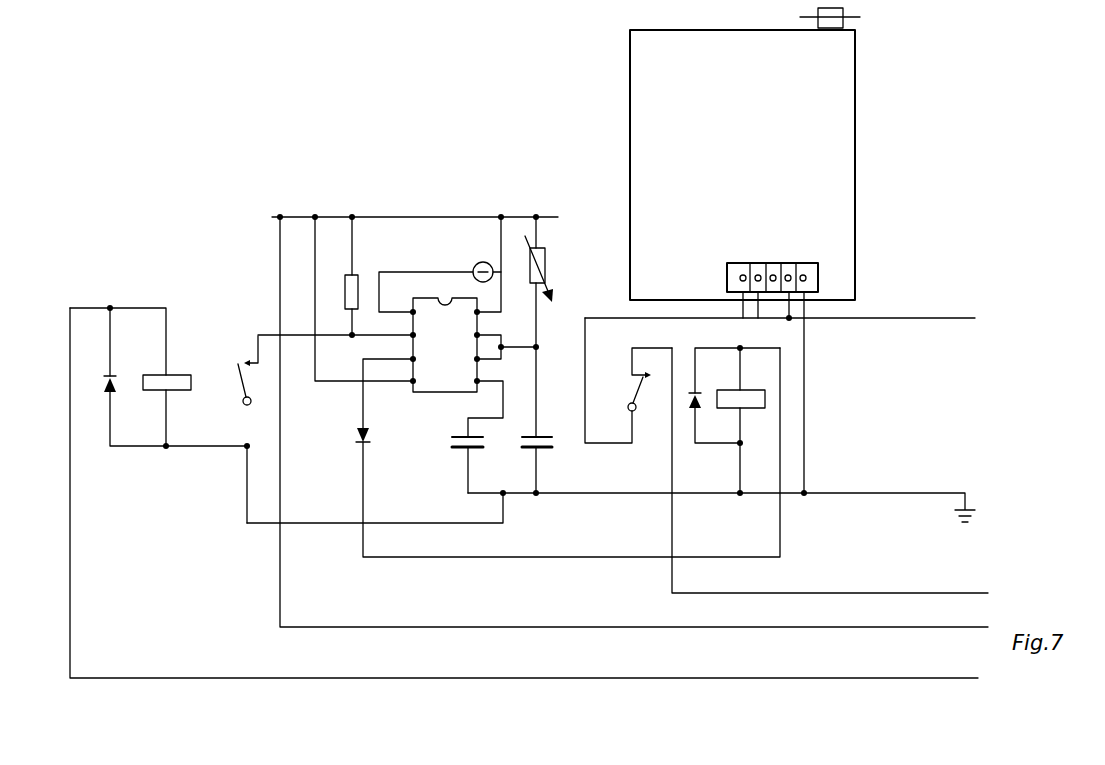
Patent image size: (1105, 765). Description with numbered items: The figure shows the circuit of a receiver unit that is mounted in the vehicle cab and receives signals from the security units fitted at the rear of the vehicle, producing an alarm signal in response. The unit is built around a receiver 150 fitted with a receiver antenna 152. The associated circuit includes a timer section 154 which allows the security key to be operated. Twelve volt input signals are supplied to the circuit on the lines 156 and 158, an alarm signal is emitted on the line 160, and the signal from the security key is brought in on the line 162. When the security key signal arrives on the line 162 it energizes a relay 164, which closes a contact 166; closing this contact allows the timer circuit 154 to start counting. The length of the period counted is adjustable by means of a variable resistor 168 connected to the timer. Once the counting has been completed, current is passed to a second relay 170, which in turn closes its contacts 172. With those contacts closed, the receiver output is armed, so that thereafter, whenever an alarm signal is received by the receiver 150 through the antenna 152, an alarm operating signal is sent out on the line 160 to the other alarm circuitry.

The receiver 150 is at (760, 159).
The receiver antenna 152 is at (845, 17).
The timer section 154 is at (436, 218).
The line 156 is at (935, 317).
The line 158 is at (935, 627).
The line 160 is at (968, 593).
The line 162 is at (962, 678).
The relay 164 is at (160, 390).
The contact 166 is at (236, 372).
The variable resistor 168 is at (548, 262).
The second relay 170 is at (765, 398).
The contacts 172 is at (648, 395).